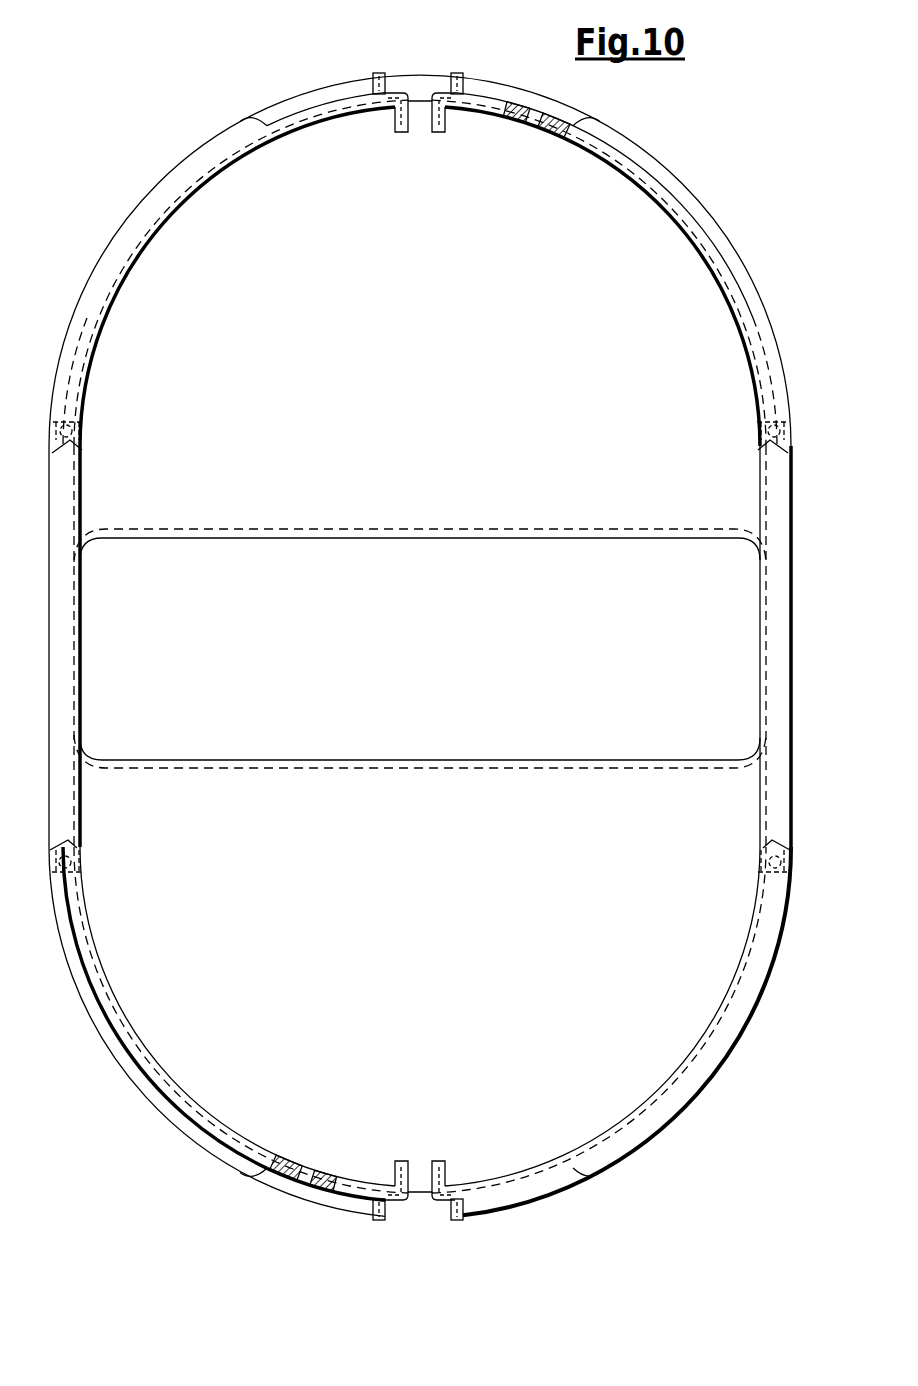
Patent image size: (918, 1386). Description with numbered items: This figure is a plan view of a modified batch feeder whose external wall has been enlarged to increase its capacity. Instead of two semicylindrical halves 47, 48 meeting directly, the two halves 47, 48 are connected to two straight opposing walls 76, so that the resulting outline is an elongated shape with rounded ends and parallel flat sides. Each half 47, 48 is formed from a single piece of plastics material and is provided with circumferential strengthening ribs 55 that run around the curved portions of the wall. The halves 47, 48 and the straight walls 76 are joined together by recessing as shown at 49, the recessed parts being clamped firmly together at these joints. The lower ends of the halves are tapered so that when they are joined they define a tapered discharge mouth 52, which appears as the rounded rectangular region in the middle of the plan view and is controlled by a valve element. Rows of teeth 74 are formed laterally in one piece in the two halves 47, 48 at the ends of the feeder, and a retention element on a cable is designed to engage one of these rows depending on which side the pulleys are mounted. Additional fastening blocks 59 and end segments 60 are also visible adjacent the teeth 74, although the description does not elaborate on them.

The semicylindrical half 47 is at (659, 215).
The semicylindrical half 48 is at (667, 1068).
The recessing 49 is at (52, 451).
The tapered discharge mouth 52 is at (367, 733).
The circumferential strengthening ribs 55 is at (150, 206).
The fastening block 59 is at (538, 121).
The end segment 60 is at (321, 99).
The rows of teeth 74 is at (373, 73).
The straight opposing walls 76 is at (58, 589).